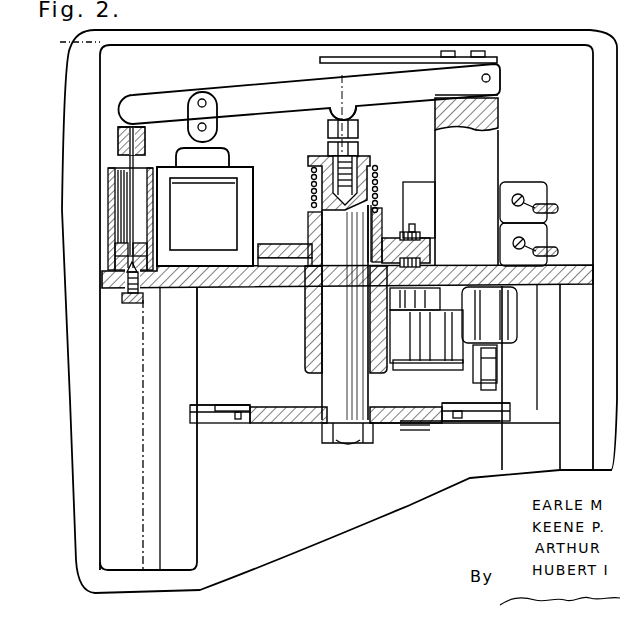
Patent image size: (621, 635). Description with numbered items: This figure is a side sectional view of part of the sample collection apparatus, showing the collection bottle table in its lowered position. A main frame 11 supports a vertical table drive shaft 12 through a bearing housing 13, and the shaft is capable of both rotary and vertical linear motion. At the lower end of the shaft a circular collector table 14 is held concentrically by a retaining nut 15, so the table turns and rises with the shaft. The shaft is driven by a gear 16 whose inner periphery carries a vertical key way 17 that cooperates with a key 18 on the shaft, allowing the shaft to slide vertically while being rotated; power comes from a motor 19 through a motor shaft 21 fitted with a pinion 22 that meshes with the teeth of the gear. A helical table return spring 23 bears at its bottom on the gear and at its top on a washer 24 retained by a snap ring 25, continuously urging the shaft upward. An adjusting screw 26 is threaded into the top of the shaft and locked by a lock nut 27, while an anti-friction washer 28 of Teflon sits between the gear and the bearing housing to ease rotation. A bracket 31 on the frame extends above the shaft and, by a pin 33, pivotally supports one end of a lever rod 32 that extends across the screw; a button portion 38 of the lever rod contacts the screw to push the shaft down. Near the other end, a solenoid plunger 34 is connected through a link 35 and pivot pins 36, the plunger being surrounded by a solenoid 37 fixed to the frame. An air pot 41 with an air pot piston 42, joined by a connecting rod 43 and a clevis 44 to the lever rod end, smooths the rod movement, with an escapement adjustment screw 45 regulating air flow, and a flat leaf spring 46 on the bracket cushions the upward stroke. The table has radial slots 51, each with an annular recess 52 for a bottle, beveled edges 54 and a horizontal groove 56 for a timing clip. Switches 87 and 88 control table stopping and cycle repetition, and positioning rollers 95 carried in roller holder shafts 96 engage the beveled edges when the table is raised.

The main frame 11 is at (190, 506).
The table drive shaft 12 is at (333, 388).
The bearing housing 13 is at (310, 324).
The collector table 14 is at (292, 424).
The retaining nut 15 is at (331, 441).
The gear 16 is at (293, 243).
The key way 17 is at (376, 205).
The key 18 is at (374, 232).
The motor 19 is at (415, 355).
The motor shaft 21 is at (412, 226).
The pinion 22 is at (424, 238).
The table return spring 23 is at (315, 180).
The washer 24 is at (379, 163).
The snap ring 25 is at (370, 160).
The adjusting screw 26 is at (340, 134).
The lock nut 27 is at (338, 148).
The anti-friction washer 28 is at (313, 268).
The bracket 31 is at (488, 159).
The lever rod 32 is at (290, 93).
The pin 33 is at (491, 78).
The solenoid plunger 34 is at (215, 146).
The link 35 is at (213, 108).
The pivot pins 36 is at (201, 99).
The solenoid 37 is at (238, 213).
The button portion 38 is at (356, 108).
The air pot 41 is at (114, 212).
The air pot piston 42 is at (116, 243).
The connecting rod 43 is at (130, 184).
The clevis 44 is at (118, 146).
The escapement adjustment screw 45 is at (138, 298).
The flat leaf spring 46 is at (350, 58).
The radial slots 51 is at (227, 423).
The annular recess 52 is at (240, 405).
The beveled edges 54 is at (197, 406).
The horizontal groove 56 is at (190, 417).
The switch 87 is at (529, 186).
The switch 88 is at (538, 239).
The positioning rollers 95 is at (498, 385).
The roller holder shaft 96 is at (503, 356).